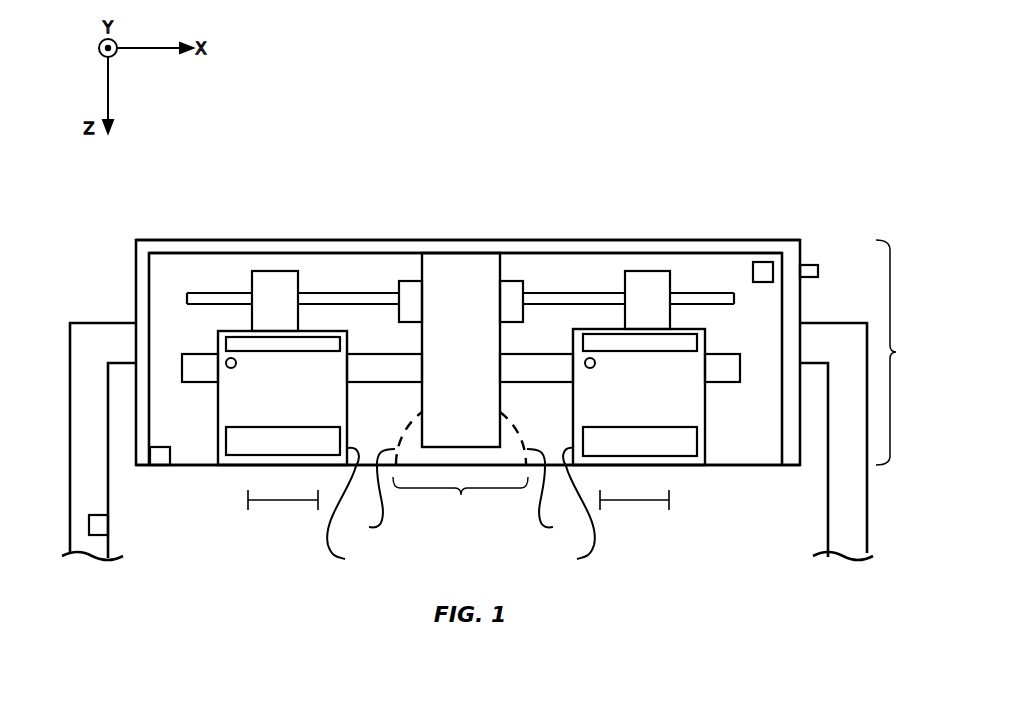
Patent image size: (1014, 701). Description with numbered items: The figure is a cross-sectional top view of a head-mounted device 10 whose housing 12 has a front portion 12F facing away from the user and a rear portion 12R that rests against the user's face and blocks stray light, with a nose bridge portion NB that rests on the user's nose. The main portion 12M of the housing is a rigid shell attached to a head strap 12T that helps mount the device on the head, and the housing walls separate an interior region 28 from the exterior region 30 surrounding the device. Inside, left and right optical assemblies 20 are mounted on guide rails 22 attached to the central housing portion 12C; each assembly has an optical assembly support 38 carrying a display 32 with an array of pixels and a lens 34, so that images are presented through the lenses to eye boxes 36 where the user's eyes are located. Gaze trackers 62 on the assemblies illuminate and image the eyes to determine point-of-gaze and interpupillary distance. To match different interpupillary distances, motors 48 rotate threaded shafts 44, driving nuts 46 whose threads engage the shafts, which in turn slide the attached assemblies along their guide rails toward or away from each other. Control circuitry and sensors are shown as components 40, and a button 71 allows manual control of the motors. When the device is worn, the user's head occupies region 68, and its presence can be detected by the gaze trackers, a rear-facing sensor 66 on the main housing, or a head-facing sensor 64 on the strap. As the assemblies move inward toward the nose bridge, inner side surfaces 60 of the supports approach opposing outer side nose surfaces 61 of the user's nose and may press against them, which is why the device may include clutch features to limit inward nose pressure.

The head-mounted device 10 is at (772, 150).
The housing 12 is at (106, 258).
The main portion of housing 12M is at (158, 247).
The central housing portion 12C is at (463, 262).
The front portion of housing 12F is at (903, 352).
The rear portion of housing 12R is at (757, 466).
The head strap 12T is at (77, 497).
The optical assembly 20 is at (212, 404).
The guide rail 22 is at (365, 358).
The interior region 28 is at (212, 262).
The exterior region 30 is at (86, 175).
The display 32 is at (282, 353).
The lens 34 is at (303, 427).
The eye box 36 is at (246, 500).
The optical assembly support 38 is at (349, 403).
The components 40 is at (762, 270).
The shaft 44 is at (358, 297).
The nut 46 is at (273, 282).
The motor 48 is at (412, 287).
The inner side surface 60 is at (461, 510).
The outer side nose surface 61 is at (461, 497).
The gaze tracker 62 is at (227, 360).
The sensor 64 is at (103, 523).
The sensor 66 is at (162, 466).
The region 68 is at (620, 562).
The button 71 is at (808, 270).
The nose bridge portion NB is at (460, 469).